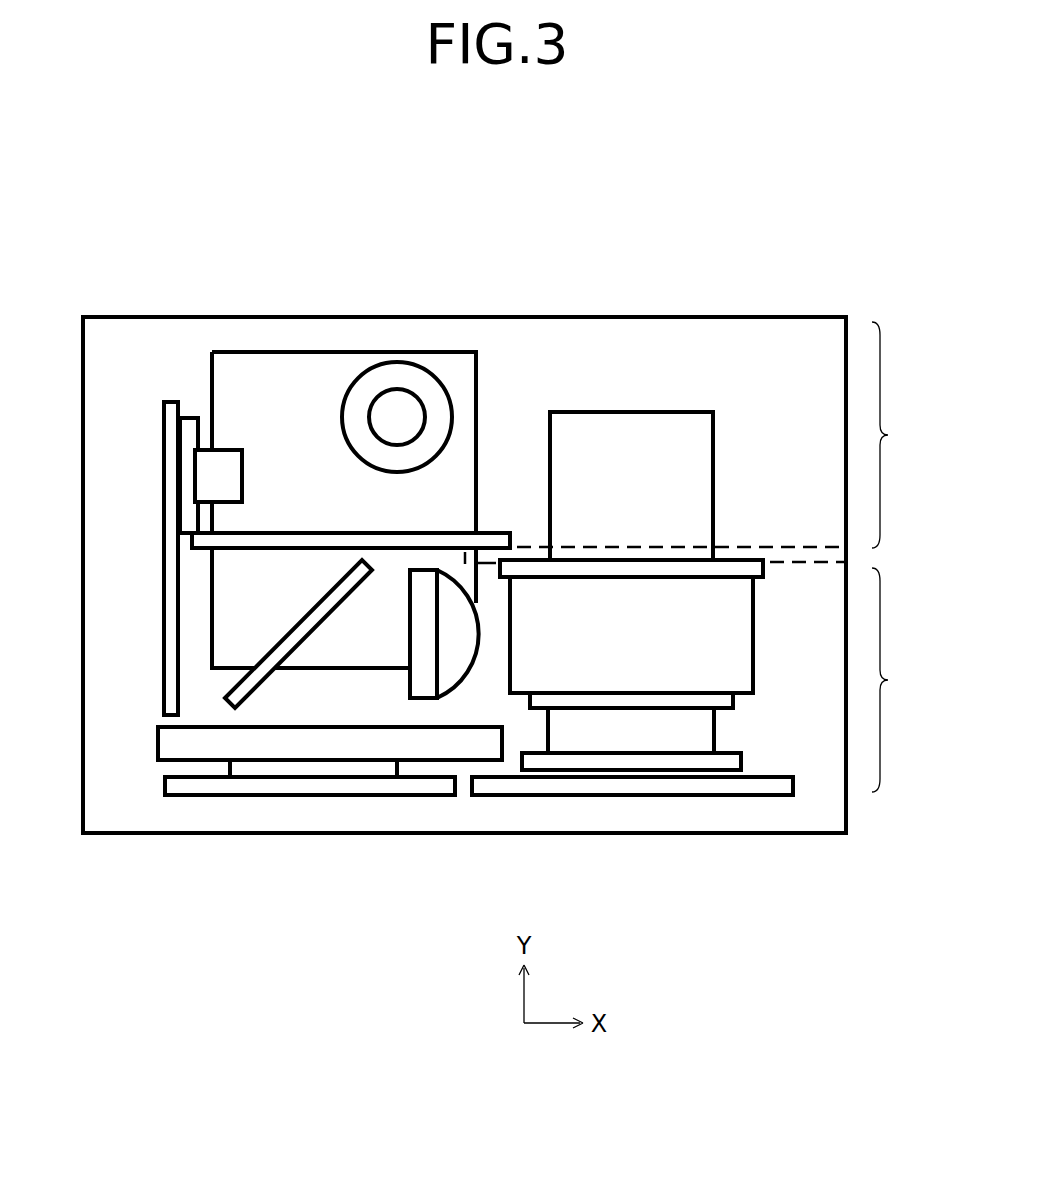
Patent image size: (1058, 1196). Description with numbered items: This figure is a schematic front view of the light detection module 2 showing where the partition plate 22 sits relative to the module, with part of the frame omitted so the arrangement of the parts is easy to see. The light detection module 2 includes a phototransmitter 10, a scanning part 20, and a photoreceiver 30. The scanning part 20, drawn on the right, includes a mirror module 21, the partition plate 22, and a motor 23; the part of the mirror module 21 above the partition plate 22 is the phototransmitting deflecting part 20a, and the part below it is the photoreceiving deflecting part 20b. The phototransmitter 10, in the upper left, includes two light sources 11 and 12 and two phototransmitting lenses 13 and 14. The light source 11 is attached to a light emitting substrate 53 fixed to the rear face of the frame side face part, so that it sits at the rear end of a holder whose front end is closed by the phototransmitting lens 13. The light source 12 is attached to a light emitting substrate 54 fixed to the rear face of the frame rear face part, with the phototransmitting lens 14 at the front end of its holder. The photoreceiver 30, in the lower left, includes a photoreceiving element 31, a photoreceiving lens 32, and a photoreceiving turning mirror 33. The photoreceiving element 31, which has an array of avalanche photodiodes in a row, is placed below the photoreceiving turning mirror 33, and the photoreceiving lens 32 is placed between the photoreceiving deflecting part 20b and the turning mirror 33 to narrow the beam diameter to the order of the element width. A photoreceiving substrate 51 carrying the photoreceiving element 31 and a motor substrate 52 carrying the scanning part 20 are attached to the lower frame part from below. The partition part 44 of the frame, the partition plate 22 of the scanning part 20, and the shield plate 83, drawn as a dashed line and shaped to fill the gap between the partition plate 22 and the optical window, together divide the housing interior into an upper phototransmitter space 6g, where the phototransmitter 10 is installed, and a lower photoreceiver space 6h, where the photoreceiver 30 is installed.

The light detection module 2 is at (722, 170).
The phototransmitter 10 is at (334, 242).
The light source 11 is at (190, 471).
The light source 12 is at (405, 382).
The phototransmitting lens 13 is at (244, 464).
The phototransmitting lens 14 is at (403, 418).
The scanning part 20 is at (641, 280).
The phototransmitting deflecting part 20a is at (670, 490).
The photoreceiving deflecting part 20b is at (700, 663).
The mirror module 21 is at (670, 435).
The partition plate 22 is at (700, 579).
The motor 23 is at (650, 740).
The photoreceiver 30 is at (344, 904).
The photoreceiving element 31 is at (300, 774).
The photoreceiving lens 32 is at (455, 670).
The photoreceiving turning mirror 33 is at (263, 672).
The partition part 44 is at (257, 550).
The photoreceiving substrate 51 is at (186, 797).
The motor substrate 52 is at (720, 797).
The light emitting substrate 53 is at (166, 576).
The light emitting substrate 54 is at (257, 380).
The shield plate 83 is at (733, 540).
The phototransmitter space 6g is at (897, 435).
The photoreceiver space 6h is at (897, 680).